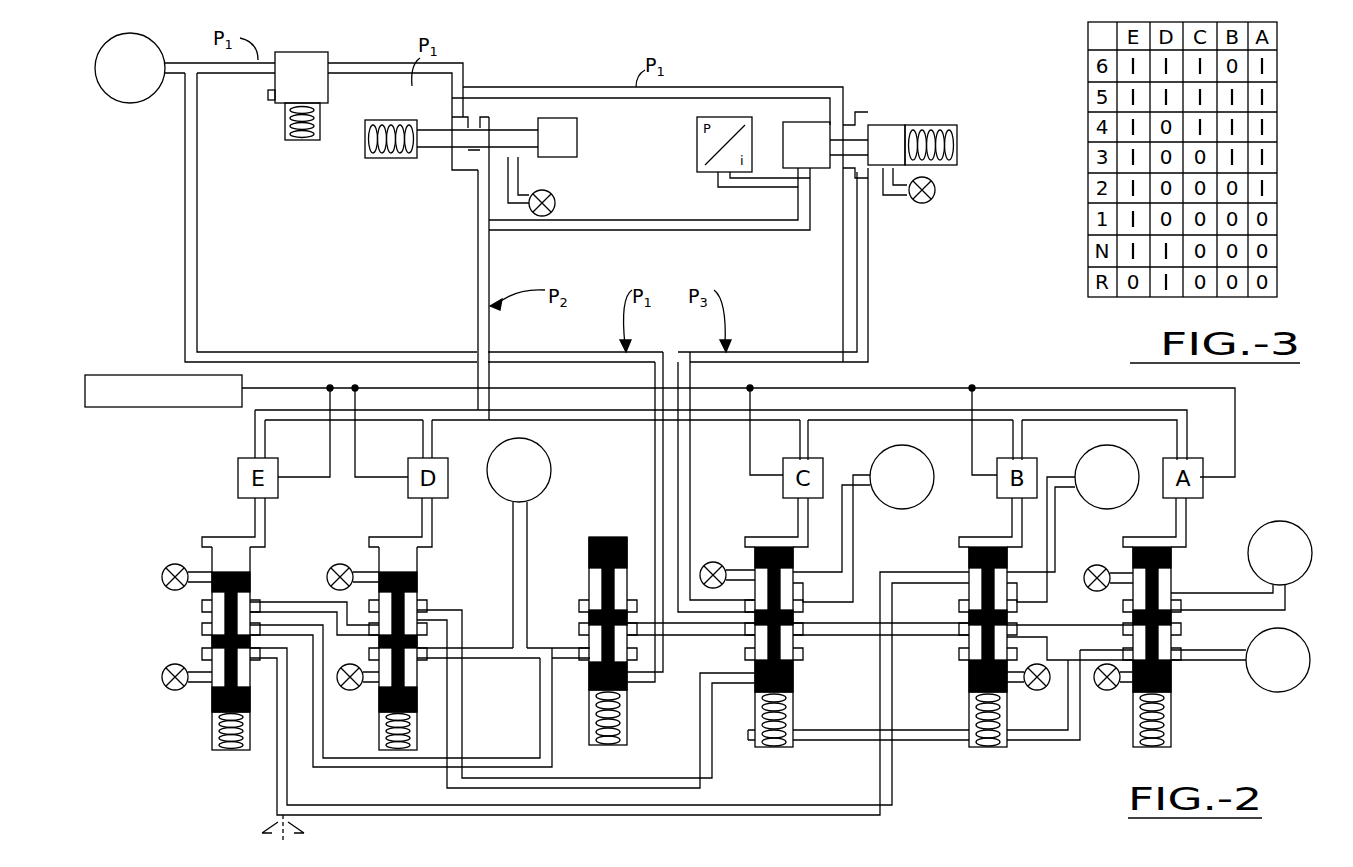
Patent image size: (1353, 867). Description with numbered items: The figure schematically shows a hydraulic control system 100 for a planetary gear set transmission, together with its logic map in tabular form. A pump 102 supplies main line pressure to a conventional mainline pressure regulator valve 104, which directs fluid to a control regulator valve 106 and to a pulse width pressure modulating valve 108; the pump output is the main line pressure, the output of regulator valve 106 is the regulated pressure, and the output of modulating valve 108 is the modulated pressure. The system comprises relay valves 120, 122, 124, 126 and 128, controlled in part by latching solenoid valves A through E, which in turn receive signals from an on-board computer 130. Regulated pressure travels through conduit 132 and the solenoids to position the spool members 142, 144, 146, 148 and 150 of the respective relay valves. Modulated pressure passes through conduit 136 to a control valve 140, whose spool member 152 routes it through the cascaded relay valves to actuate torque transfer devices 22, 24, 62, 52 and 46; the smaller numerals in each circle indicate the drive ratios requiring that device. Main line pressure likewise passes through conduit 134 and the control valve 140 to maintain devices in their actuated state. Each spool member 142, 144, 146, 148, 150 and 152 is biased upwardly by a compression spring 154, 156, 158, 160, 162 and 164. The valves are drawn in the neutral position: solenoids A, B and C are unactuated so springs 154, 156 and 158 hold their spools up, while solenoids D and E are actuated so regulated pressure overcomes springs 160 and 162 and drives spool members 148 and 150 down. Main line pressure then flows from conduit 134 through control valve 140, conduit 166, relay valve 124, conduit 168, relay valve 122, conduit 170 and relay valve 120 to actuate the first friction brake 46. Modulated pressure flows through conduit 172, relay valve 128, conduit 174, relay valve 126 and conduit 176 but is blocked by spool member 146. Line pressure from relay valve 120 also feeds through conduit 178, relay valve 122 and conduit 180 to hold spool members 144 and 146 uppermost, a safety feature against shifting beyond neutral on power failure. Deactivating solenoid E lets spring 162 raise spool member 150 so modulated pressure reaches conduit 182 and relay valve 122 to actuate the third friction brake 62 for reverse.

The hydraulic control system 100 is at (878, 372).
The pump 102 is at (146, 106).
The mainline pressure regulator valve 104 is at (320, 52).
The control regulator valve 106 is at (590, 146).
The pulse width pressure modulating valve 108 is at (904, 118).
The relay valve 120 is at (1130, 532).
The relay valve 122 is at (984, 530).
The relay valve 124 is at (763, 530).
The relay valve 126 is at (392, 530).
The relay valve 128 is at (222, 530).
The on-board computer 130 is at (176, 408).
The conduit 132 is at (477, 340).
The conduit 134 is at (592, 352).
The conduit 136 is at (770, 352).
The control valve 140 is at (601, 530).
The spool member 142 is at (1172, 557).
The spool member 144 is at (968, 556).
The spool member 146 is at (793, 564).
The spool member 148 is at (417, 585).
The spool member 150 is at (212, 592).
The spool member 152 is at (589, 563).
The compression spring 154 is at (1165, 723).
The compression spring 156 is at (990, 745).
The compression spring 158 is at (770, 742).
The compression spring 160 is at (396, 750).
The compression spring 162 is at (225, 748).
The compression spring 164 is at (618, 735).
The conduit 166 is at (727, 640).
The conduit 168 is at (948, 636).
The conduit 170 is at (1105, 625).
The conduit 172 is at (520, 752).
The conduit 174 is at (300, 600).
The conduit 176 is at (617, 780).
The conduit 178 is at (1078, 742).
The conduit 180 is at (908, 741).
The conduit 182 is at (893, 800).
The torque transfer device 22 is at (519, 543).
The torque transfer device 24 is at (902, 477).
The first friction brake 46 is at (1278, 660).
The torque transfer device 52 is at (1280, 553).
The third friction brake 62 is at (1107, 477).